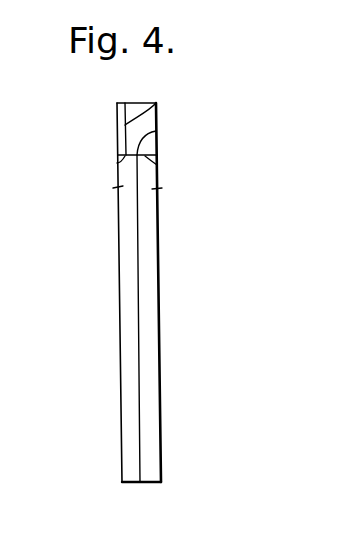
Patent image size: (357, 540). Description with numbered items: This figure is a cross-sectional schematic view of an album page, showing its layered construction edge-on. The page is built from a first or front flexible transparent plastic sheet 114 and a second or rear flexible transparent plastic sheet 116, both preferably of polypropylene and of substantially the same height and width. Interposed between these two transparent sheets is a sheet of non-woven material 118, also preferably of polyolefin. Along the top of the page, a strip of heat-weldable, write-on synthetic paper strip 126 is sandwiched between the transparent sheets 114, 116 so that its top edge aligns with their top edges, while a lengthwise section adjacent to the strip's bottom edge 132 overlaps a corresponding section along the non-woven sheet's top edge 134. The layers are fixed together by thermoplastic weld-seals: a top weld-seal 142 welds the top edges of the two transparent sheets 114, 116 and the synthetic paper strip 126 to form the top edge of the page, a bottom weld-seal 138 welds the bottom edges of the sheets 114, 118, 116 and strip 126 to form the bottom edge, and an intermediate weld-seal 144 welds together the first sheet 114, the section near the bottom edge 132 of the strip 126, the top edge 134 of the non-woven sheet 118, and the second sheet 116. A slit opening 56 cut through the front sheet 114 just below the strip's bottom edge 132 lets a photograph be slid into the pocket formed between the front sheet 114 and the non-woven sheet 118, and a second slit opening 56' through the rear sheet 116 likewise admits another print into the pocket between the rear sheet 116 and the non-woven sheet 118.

The slit opening 56 is at (90, 199).
The second slit opening 56' is at (178, 207).
The first transparent plastic sheet 114 is at (118, 338).
The second transparent plastic sheet 116 is at (157, 334).
The sheet of non-woven material 118 is at (138, 287).
The synthetic paper strip 126 is at (156, 103).
The bottom edge of the synthetic paper strip 132 is at (117, 163).
The top edge of the non-woven sheet 134 is at (156, 131).
The bottom weld-seal 138 is at (126, 483).
The top weld-seal 142 is at (116, 103).
The intermediate weld-seal 144 is at (157, 165).